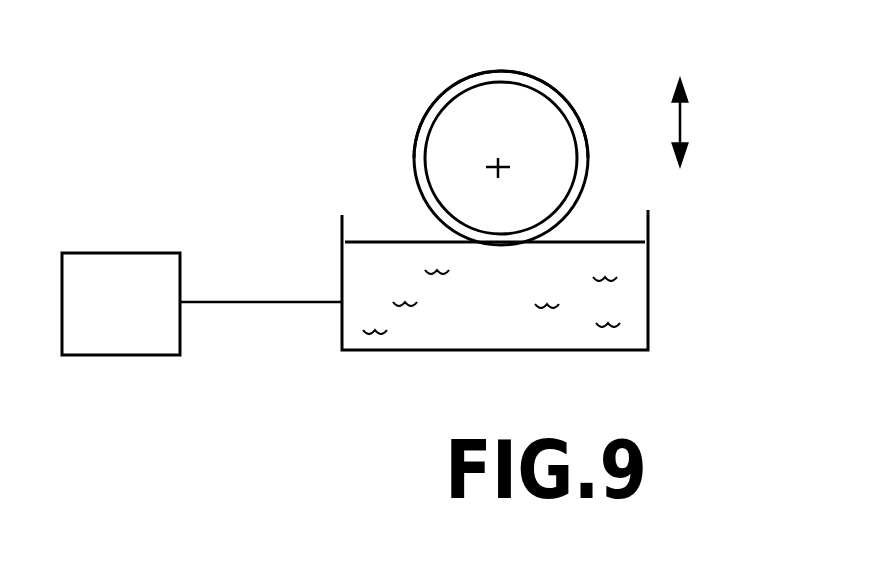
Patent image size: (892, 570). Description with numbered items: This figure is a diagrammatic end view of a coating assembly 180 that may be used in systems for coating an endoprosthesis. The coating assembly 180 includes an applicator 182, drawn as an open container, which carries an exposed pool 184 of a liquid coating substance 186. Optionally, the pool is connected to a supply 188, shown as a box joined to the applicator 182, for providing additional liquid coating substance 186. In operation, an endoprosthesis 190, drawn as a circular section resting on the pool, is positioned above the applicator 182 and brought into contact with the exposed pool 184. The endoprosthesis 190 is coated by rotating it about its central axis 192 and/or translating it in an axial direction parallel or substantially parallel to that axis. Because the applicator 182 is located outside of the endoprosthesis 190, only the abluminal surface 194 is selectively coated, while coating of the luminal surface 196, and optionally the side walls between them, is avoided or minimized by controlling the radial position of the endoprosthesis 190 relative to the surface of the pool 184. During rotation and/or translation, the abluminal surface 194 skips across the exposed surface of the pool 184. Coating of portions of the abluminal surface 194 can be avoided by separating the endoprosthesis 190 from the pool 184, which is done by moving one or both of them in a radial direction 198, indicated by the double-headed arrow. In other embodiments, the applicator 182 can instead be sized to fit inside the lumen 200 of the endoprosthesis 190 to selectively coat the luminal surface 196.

The coating assembly 180 is at (240, 103).
The applicator 182 is at (378, 352).
The exposed pool 184 is at (367, 240).
The liquid coating substance 186 is at (390, 280).
The supply 188 is at (150, 356).
The endoprosthesis 190 is at (445, 122).
The central axis 192 is at (494, 165).
The abluminal surface 194 is at (455, 75).
The luminal surface 196 is at (527, 106).
The radial direction 198 is at (686, 122).
The lumen 200 is at (540, 142).